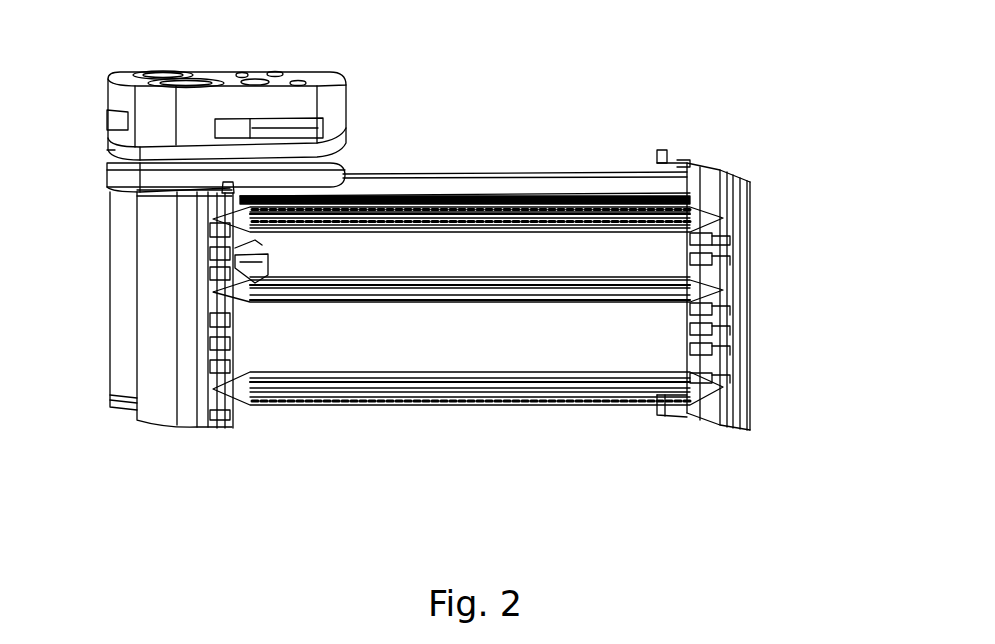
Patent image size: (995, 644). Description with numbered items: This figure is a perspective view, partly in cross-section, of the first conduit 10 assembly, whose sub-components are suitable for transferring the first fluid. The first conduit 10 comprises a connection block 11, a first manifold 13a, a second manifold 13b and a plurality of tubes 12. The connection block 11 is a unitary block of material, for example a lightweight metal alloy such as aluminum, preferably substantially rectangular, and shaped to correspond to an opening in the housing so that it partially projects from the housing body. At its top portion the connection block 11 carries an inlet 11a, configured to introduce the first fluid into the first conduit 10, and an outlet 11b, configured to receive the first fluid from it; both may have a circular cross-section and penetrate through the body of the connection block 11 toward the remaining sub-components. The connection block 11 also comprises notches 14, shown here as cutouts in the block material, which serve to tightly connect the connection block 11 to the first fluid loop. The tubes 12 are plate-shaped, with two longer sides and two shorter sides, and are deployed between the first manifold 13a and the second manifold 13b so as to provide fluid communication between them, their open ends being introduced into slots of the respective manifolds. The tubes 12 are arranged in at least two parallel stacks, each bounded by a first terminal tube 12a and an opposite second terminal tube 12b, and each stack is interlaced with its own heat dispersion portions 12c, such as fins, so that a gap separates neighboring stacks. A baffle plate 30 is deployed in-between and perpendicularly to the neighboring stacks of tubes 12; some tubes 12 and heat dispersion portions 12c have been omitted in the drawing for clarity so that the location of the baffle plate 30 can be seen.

The first conduit 10 is at (733, 140).
The connection block 11 is at (287, 103).
The inlet 11a is at (170, 72).
The outlet 11b is at (207, 82).
The tubes 12 is at (713, 286).
The first terminal tube 12a is at (713, 210).
The second terminal tube 12b is at (713, 388).
The heat dispersion portions 12c is at (513, 198).
The first manifold 13a is at (134, 314).
The second manifold 13b is at (723, 415).
The notches 14 is at (253, 123).
The baffle plate 30 is at (403, 347).